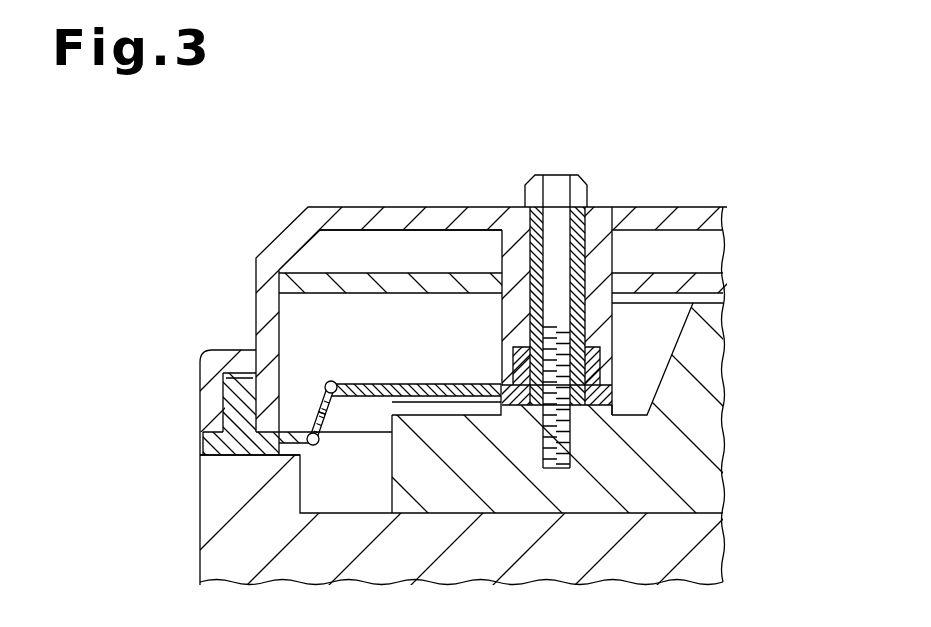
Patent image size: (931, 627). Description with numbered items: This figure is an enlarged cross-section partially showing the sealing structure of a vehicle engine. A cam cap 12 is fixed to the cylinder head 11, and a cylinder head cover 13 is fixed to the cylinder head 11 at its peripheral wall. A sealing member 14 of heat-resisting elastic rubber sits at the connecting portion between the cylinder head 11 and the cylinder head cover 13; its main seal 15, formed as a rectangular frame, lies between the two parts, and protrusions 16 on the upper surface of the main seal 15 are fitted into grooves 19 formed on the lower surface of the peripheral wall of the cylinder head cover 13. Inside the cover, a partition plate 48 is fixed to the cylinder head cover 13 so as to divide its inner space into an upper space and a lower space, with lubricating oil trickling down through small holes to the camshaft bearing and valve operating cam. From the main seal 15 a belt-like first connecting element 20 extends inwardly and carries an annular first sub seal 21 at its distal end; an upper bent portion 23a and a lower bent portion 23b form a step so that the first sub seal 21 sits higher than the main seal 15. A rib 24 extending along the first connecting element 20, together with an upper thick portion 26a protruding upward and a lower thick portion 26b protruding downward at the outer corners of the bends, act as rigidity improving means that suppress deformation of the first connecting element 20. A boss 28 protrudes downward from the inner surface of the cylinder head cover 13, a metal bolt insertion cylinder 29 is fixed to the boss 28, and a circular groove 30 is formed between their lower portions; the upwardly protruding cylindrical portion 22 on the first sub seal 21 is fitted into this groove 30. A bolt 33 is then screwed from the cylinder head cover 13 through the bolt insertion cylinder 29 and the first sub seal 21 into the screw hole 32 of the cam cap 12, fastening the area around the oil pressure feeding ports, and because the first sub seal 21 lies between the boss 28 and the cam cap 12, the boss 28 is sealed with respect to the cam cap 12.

The cylinder head 11 is at (205, 548).
The cam cap 12 is at (722, 437).
The cylinder head cover 13 is at (340, 207).
The sealing member 14 is at (205, 435).
The main seal 15 is at (212, 458).
The protrusion 16 is at (222, 381).
The groove 19 is at (240, 372).
The first connecting element 20 is at (512, 378).
The first sub seal 21 is at (612, 392).
The cylindrical portion 22 is at (597, 347).
The upper bent portion 23a is at (357, 392).
The lower bent portion 23b is at (308, 428).
The rib 24 is at (423, 385).
The upper thick portion 26a is at (337, 373).
The lower thick portion 26b is at (322, 446).
The boss 28 is at (506, 250).
The bolt insertion cylinder 29 is at (583, 248).
The circular groove 30 is at (539, 406).
The screw hole 32 is at (547, 444).
The bolt 33 is at (568, 174).
The partition plate 48 is at (342, 272).